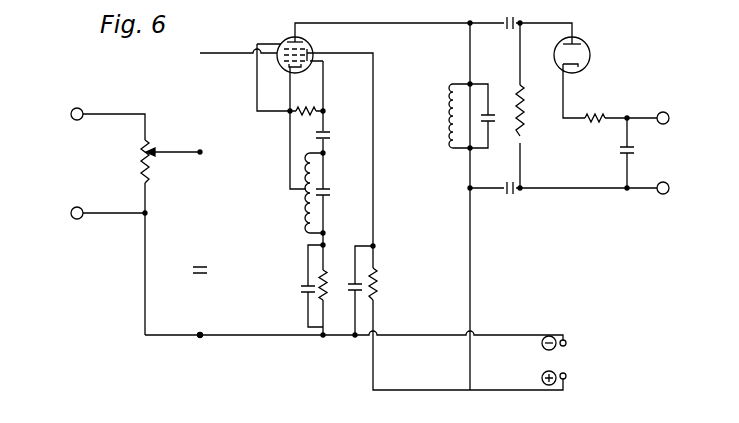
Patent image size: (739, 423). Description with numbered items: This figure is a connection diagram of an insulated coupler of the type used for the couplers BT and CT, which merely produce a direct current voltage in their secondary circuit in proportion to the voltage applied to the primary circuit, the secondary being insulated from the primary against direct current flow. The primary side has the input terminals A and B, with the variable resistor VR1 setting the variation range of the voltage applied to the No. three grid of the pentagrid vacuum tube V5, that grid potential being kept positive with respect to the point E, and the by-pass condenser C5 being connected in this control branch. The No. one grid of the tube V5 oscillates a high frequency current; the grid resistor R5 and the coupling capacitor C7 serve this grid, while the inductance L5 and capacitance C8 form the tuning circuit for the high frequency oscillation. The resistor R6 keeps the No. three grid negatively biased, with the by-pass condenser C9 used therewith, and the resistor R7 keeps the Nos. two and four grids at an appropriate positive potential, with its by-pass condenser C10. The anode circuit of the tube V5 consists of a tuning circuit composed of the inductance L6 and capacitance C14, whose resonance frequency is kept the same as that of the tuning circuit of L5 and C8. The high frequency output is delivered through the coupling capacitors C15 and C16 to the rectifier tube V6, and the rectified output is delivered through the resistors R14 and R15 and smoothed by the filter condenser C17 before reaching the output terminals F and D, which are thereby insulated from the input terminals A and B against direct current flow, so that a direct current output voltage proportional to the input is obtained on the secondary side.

The input terminal A is at (77, 114).
The input terminal B is at (77, 213).
The output terminal D is at (663, 188).
The point E is at (203, 338).
The output terminal F is at (663, 118).
The variable resistor VR1 is at (150, 146).
The by-pass condenser C5 is at (205, 269).
The pentagrid vacuum tube V5 is at (290, 39).
The grid resistor R5 is at (302, 115).
The coupling capacitor C7 is at (328, 134).
The capacitance C8 is at (329, 191).
The inductance L5 is at (295, 197).
The by-pass condenser C9 is at (305, 290).
The resistor R6 is at (327, 284).
The by-pass condenser C10 is at (353, 290).
The resistor R7 is at (377, 292).
The coupling capacitor C15 is at (511, 19).
The inductance L6 is at (461, 116).
The capacitance C14 is at (494, 117).
The resistor R14 is at (526, 112).
The vacuum tube V6 is at (575, 42).
The resistor R15 is at (597, 115).
The filter condenser C17 is at (632, 151).
The coupling capacitor C16 is at (512, 195).